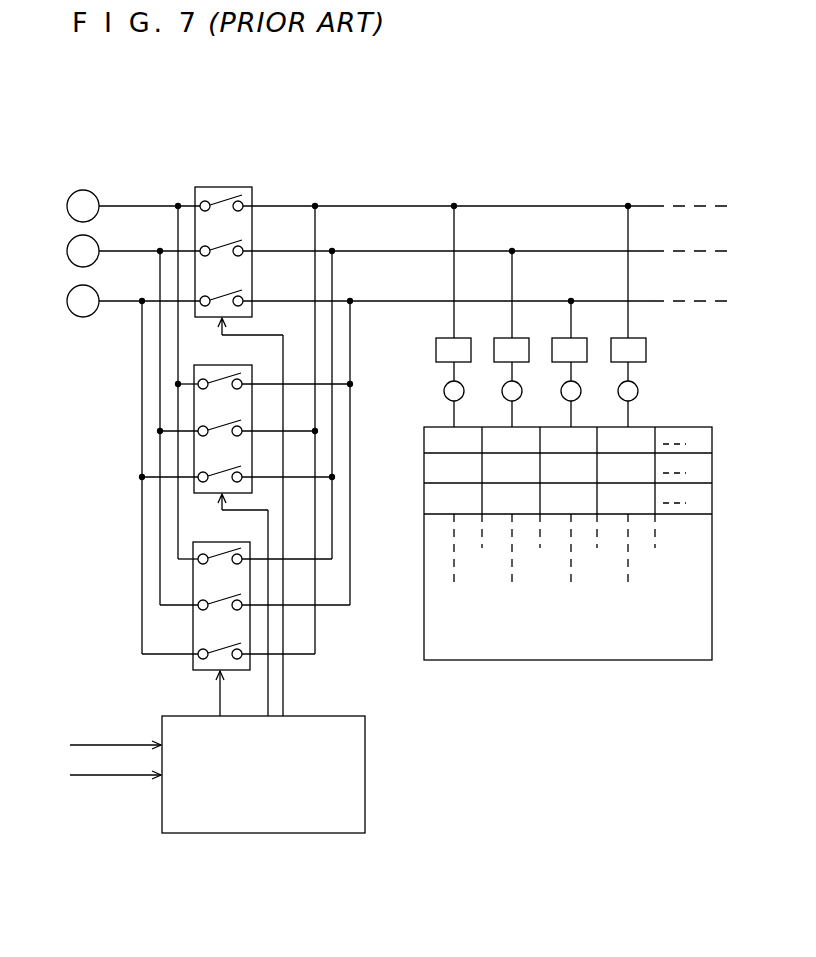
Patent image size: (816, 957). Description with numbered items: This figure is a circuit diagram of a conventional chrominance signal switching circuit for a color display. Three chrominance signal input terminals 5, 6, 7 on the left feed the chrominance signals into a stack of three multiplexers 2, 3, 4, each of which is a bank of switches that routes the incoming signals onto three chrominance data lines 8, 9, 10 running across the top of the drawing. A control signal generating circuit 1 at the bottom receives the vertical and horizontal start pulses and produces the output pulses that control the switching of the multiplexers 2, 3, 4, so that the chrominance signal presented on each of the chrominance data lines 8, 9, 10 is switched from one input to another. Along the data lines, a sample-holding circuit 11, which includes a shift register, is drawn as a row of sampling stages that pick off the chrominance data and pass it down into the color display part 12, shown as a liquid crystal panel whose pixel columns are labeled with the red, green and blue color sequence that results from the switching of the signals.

The control signal generating circuit 1 is at (200, 827).
The multiplexer 2 is at (197, 663).
The multiplexer 3 is at (203, 448).
The multiplexer 4 is at (256, 190).
The chrominance signal input terminal 5 is at (70, 199).
The chrominance signal input terminal 6 is at (69, 251).
The chrominance signal input terminal 7 is at (69, 299).
The chrominance data line 8 is at (648, 207).
The chrominance data line 9 is at (648, 252).
The chrominance data line 10 is at (648, 302).
The sample-holding circuit 11 is at (436, 338).
The color display part 12 is at (661, 652).